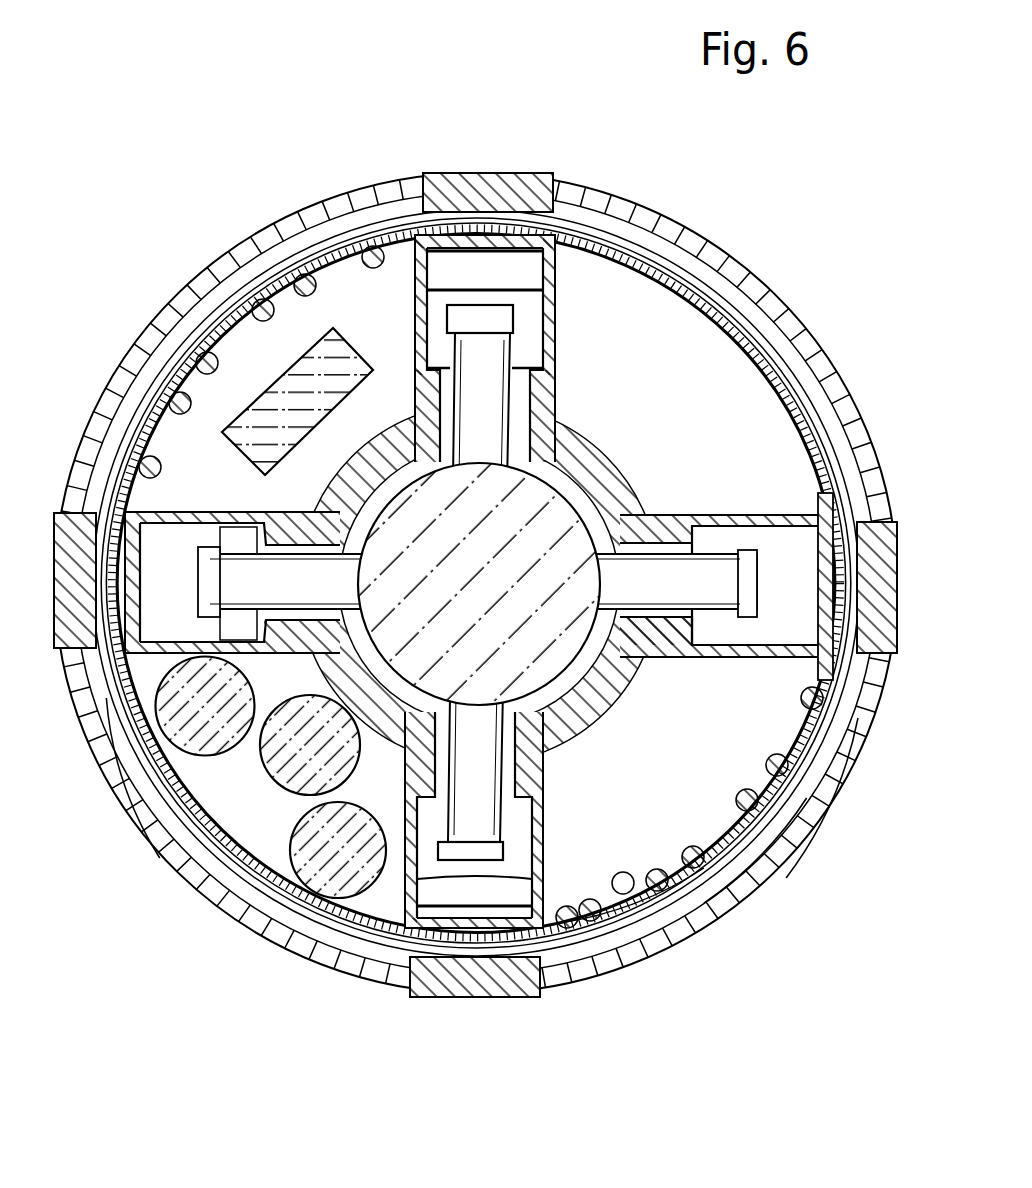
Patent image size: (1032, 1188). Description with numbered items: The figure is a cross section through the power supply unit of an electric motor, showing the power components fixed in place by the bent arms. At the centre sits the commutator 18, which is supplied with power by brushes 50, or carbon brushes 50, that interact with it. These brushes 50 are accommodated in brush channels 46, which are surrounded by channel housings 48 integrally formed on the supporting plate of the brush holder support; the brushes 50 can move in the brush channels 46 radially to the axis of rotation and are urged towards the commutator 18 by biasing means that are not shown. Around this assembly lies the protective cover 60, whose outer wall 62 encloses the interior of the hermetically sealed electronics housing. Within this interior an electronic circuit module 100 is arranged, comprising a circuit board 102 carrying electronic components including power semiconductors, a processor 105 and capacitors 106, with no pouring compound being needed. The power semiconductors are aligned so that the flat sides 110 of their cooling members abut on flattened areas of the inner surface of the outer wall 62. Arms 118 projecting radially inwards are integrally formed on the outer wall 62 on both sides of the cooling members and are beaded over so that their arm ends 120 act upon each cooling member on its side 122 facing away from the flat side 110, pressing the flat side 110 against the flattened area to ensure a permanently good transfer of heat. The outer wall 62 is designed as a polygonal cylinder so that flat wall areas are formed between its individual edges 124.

The commutator 18 is at (560, 492).
The brush channels 46 is at (705, 625).
The channel housings 48 is at (766, 516).
The brushes 50 is at (644, 582).
The protective cover 60 is at (138, 743).
The outer wall 62 is at (757, 880).
The electronic circuit module 100 is at (211, 779).
The circuit board 102 is at (183, 868).
The processor 105 is at (270, 417).
The capacitors 106 is at (240, 915).
The flat sides 110 is at (601, 925).
The arms 118 is at (690, 878).
The arm ends 120 is at (594, 902).
The side 122 is at (626, 905).
The edges 124 is at (820, 818).